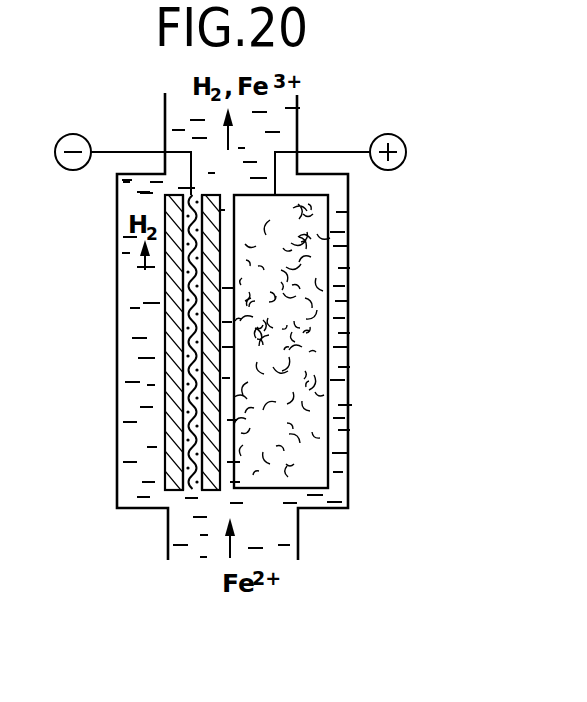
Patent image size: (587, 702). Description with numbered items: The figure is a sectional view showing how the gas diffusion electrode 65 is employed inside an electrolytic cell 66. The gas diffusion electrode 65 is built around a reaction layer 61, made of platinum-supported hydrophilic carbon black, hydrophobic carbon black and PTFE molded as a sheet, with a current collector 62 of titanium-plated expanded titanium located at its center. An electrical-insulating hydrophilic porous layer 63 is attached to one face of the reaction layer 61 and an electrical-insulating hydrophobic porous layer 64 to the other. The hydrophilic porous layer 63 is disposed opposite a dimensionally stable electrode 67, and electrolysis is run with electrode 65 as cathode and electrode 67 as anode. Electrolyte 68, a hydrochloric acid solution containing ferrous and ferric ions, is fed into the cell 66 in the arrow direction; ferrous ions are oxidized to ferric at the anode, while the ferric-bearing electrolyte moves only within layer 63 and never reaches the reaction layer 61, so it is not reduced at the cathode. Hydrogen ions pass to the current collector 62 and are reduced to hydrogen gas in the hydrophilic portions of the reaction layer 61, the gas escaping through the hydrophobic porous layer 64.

The reaction layer 61 is at (183, 472).
The current collector 62 is at (193, 358).
The hydrophilic porous layer 63 is at (210, 315).
The hydrophobic porous layer 64 is at (167, 420).
The gas diffusion electrode 65 is at (155, 294).
The electrolytic cell 66 is at (357, 245).
The dimensionally stable electrode 67 is at (315, 382).
The electrolyte 68 is at (230, 460).